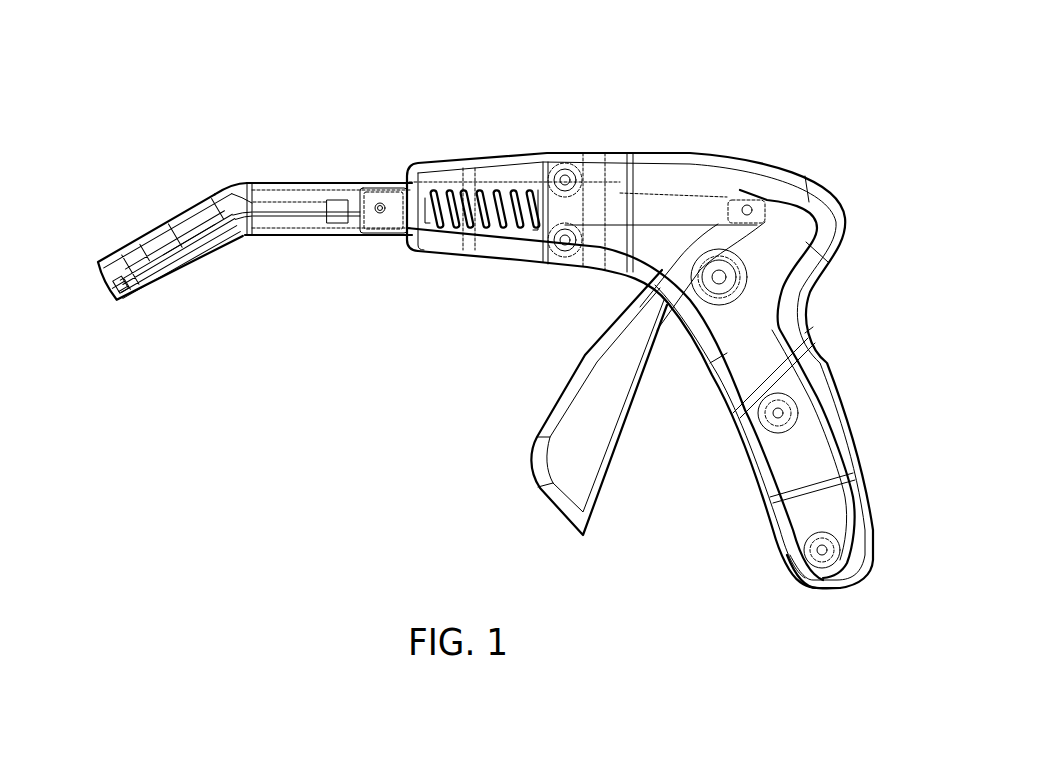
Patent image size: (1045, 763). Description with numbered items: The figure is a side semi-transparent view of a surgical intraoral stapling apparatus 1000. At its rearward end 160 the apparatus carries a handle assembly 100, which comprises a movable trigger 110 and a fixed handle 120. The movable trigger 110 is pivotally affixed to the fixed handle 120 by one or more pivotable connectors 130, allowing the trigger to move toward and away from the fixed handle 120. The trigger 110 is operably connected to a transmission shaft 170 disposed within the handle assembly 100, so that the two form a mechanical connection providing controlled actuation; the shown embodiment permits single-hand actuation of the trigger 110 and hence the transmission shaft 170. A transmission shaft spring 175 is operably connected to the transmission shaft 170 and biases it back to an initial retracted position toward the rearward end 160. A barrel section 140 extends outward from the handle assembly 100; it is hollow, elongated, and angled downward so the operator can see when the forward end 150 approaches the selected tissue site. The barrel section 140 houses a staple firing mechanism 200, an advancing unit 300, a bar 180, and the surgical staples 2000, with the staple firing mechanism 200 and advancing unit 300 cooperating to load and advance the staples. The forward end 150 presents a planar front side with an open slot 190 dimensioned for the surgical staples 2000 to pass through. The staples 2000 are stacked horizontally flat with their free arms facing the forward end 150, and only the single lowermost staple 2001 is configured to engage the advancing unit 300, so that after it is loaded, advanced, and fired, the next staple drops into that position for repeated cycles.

The surgical intraoral stapling apparatus 1000 is at (590, 82).
The handle assembly 100 is at (815, 102).
The movable trigger 110 is at (848, 218).
The fixed handle 120 is at (840, 437).
The pivotable connectors 130 is at (727, 277).
The barrel section 140 is at (388, 144).
The forward end 150 is at (177, 257).
The rearward end 160 is at (585, 355).
The transmission shaft 170 is at (658, 206).
The transmission shaft spring 175 is at (495, 200).
The bar 180 is at (285, 215).
The open slot 190 is at (120, 288).
The staple firing mechanism 200 is at (251, 257).
The advancing unit 300 is at (197, 283).
The surgical staples 2000 is at (103, 243).
The lowermost staple 2001 is at (105, 280).